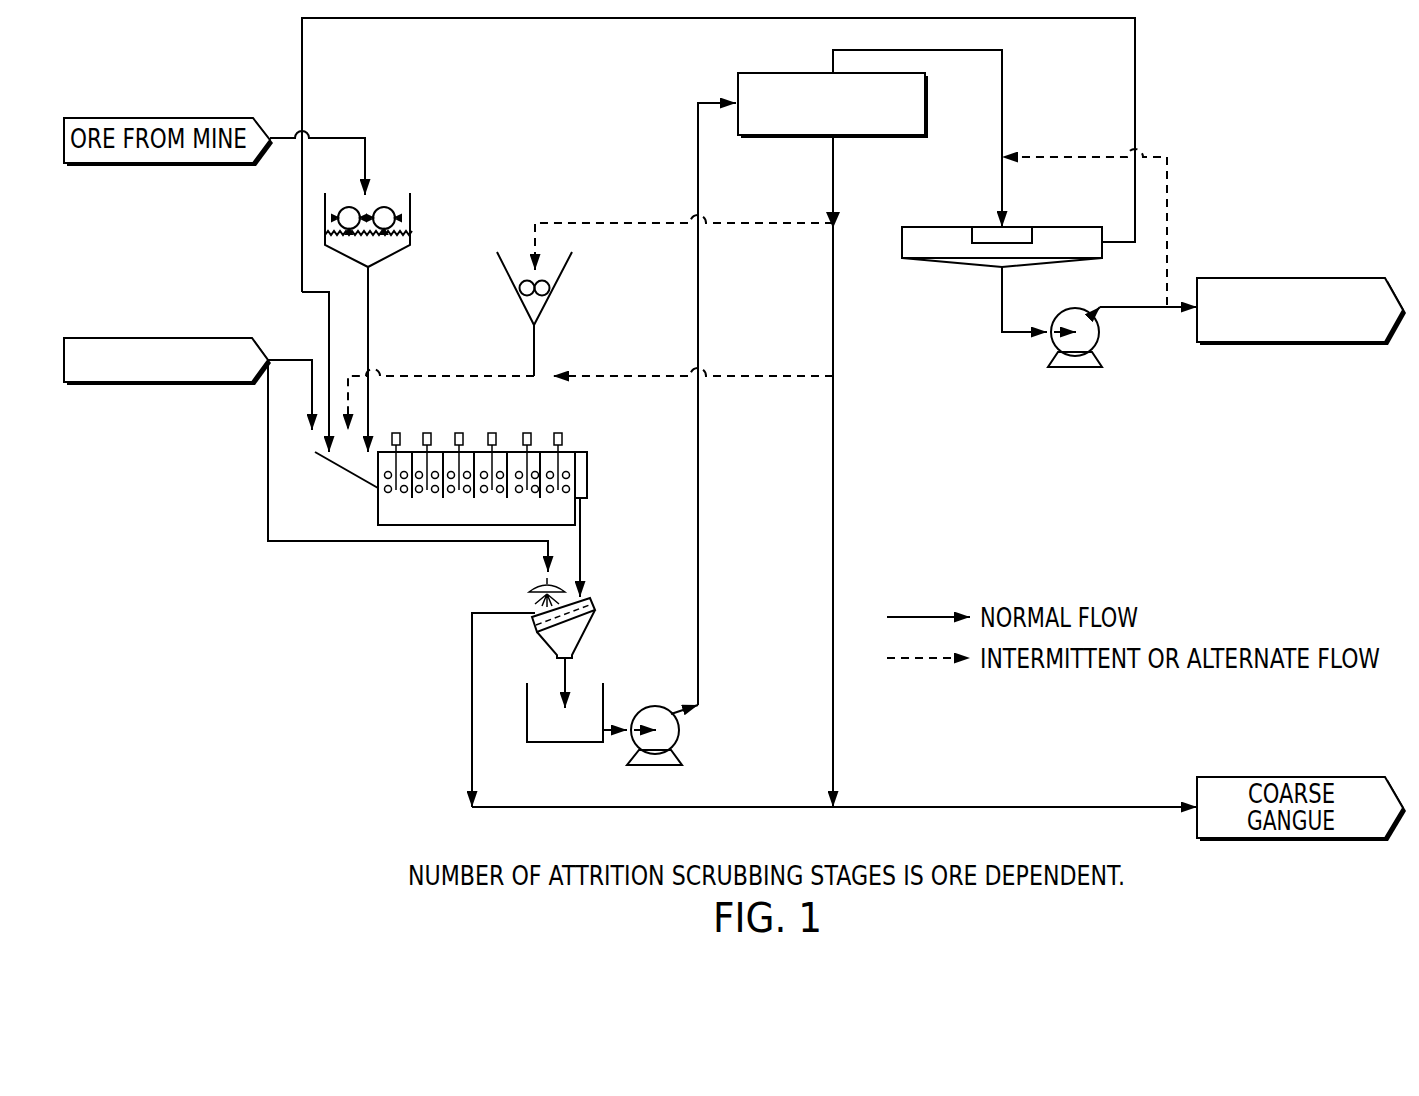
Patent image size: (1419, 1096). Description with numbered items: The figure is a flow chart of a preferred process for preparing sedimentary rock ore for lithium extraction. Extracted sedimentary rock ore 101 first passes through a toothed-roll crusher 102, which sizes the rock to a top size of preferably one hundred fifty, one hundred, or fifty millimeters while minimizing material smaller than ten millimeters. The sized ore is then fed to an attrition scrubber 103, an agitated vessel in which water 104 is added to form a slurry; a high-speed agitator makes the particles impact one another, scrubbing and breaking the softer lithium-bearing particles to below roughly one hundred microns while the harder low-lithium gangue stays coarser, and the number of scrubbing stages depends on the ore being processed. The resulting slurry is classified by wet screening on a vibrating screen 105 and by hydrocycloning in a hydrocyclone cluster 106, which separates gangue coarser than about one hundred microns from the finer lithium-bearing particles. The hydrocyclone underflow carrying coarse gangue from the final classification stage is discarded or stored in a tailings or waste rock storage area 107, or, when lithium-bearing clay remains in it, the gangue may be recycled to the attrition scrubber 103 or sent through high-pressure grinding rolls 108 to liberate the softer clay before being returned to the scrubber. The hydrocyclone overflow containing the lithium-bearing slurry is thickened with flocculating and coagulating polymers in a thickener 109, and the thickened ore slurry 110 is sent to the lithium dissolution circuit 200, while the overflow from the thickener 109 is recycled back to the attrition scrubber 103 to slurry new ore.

The sedimentary rock ore 101 is at (343, 128).
The toothed-roll crusher 102 is at (410, 205).
The attrition scrubber 103 is at (403, 525).
The water 104 is at (156, 337).
The vibrating screen 105 is at (545, 643).
The hydrocyclone cluster 106 is at (736, 95).
The tailings or waste rock storage area 107 is at (833, 180).
The high-pressure grinding rolls (HPGR) 108 is at (549, 290).
The thickener 109 is at (925, 260).
The thickened ore slurry 110 is at (1143, 310).
The lithium dissolution circuit 200 is at (1292, 277).